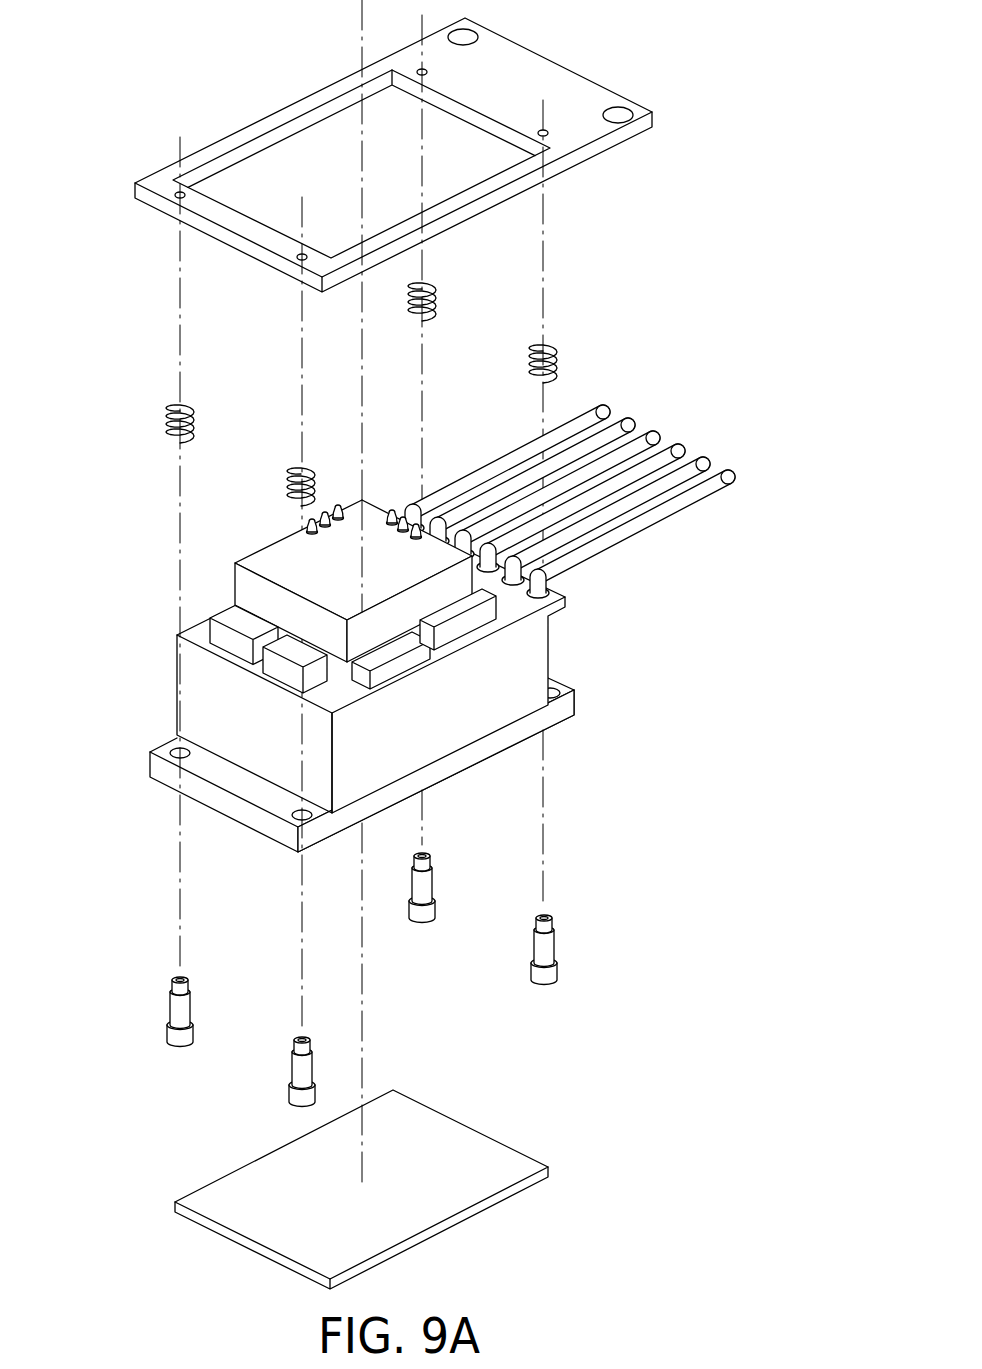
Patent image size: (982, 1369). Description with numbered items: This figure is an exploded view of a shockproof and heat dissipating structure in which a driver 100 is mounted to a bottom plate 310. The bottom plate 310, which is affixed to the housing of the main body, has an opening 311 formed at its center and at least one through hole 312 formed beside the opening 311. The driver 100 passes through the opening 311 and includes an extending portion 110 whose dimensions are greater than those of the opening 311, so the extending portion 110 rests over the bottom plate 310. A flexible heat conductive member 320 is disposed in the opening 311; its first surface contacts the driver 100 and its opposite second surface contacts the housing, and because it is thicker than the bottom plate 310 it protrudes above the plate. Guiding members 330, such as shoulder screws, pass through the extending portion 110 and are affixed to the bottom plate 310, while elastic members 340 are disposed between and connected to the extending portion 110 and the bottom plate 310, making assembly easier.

The driver 100 is at (575, 657).
The extending portion 110 is at (167, 772).
The bottom plate 310 is at (535, 82).
The opening 311 is at (320, 158).
The through hole 312 is at (178, 200).
The flexible heat conductive member 320 is at (250, 1180).
The guiding member 330 is at (178, 1010).
The elastic member 340 is at (165, 427).